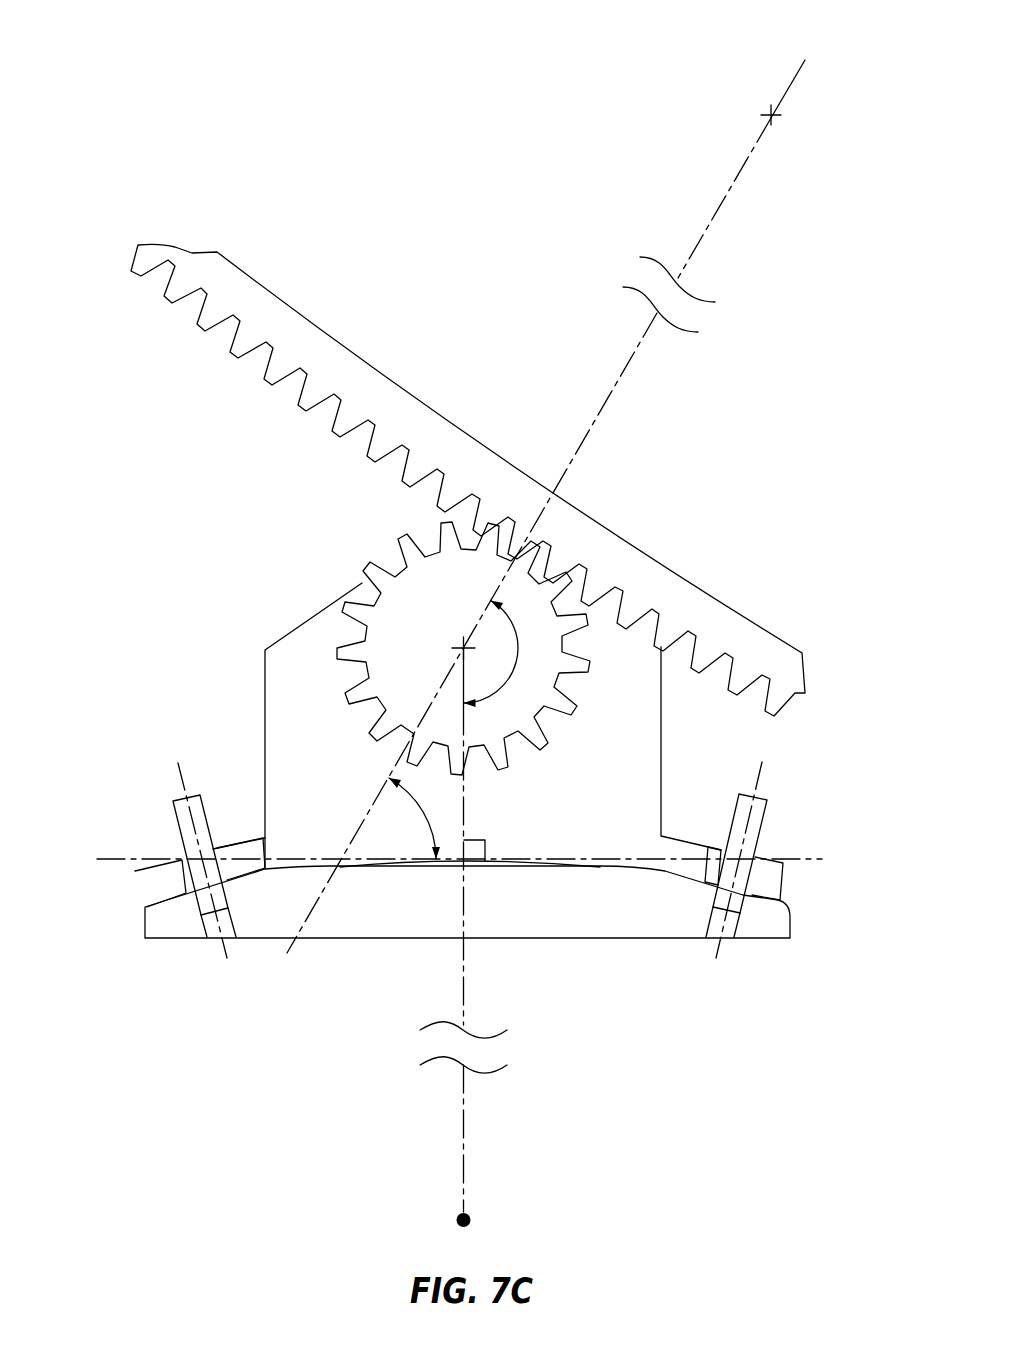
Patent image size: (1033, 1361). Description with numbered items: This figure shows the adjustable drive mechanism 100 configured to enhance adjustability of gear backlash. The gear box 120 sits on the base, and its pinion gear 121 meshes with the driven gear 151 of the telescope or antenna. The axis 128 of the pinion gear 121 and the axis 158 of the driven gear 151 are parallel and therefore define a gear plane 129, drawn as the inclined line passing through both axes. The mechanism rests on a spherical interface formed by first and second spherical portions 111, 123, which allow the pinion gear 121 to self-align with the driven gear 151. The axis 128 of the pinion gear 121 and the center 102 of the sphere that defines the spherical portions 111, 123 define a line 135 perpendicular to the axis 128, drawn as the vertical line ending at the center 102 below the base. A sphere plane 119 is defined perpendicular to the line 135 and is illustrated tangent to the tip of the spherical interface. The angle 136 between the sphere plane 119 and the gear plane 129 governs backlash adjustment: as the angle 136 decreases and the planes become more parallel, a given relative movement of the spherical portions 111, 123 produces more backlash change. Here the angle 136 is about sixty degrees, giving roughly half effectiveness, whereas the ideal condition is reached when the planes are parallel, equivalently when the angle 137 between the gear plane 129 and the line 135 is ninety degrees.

The adjustable drive mechanism 100 is at (495, 88).
The center of the sphere 102 is at (470, 1221).
The first spherical portion 111 is at (278, 882).
The sphere plane 119 is at (297, 860).
The gear box 120 is at (234, 632).
The pinion gear 121 is at (543, 753).
The second spherical portion 123 is at (250, 840).
The axis of the pinion gear 128 is at (463, 648).
The gear plane 129 is at (587, 435).
The line 135 is at (464, 825).
The angle between the sphere plane and the gear plane 136 is at (420, 815).
The angle between the gear plane and the line 137 is at (517, 667).
The driven gear 151 is at (730, 693).
The axis of the driven gear 158 is at (768, 110).